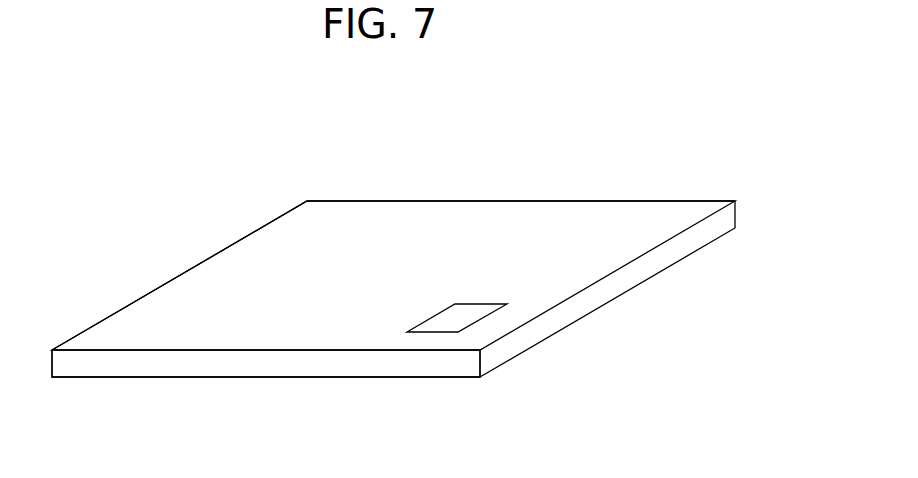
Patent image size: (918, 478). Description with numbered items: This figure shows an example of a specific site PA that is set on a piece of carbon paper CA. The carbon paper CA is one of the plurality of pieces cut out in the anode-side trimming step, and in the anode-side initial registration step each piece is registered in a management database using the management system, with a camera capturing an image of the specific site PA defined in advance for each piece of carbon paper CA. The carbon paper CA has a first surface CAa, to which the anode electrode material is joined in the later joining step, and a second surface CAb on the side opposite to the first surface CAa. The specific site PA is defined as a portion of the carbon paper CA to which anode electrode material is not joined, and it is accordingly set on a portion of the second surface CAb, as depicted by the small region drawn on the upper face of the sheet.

The cover (cover case CC) CA is at (315, 166).
The upper surface of cover (CCb) CAb is at (216, 275).
The lower/front surface of cover (CCa) CAa is at (352, 377).
The pad portion (PC) PA is at (462, 317).